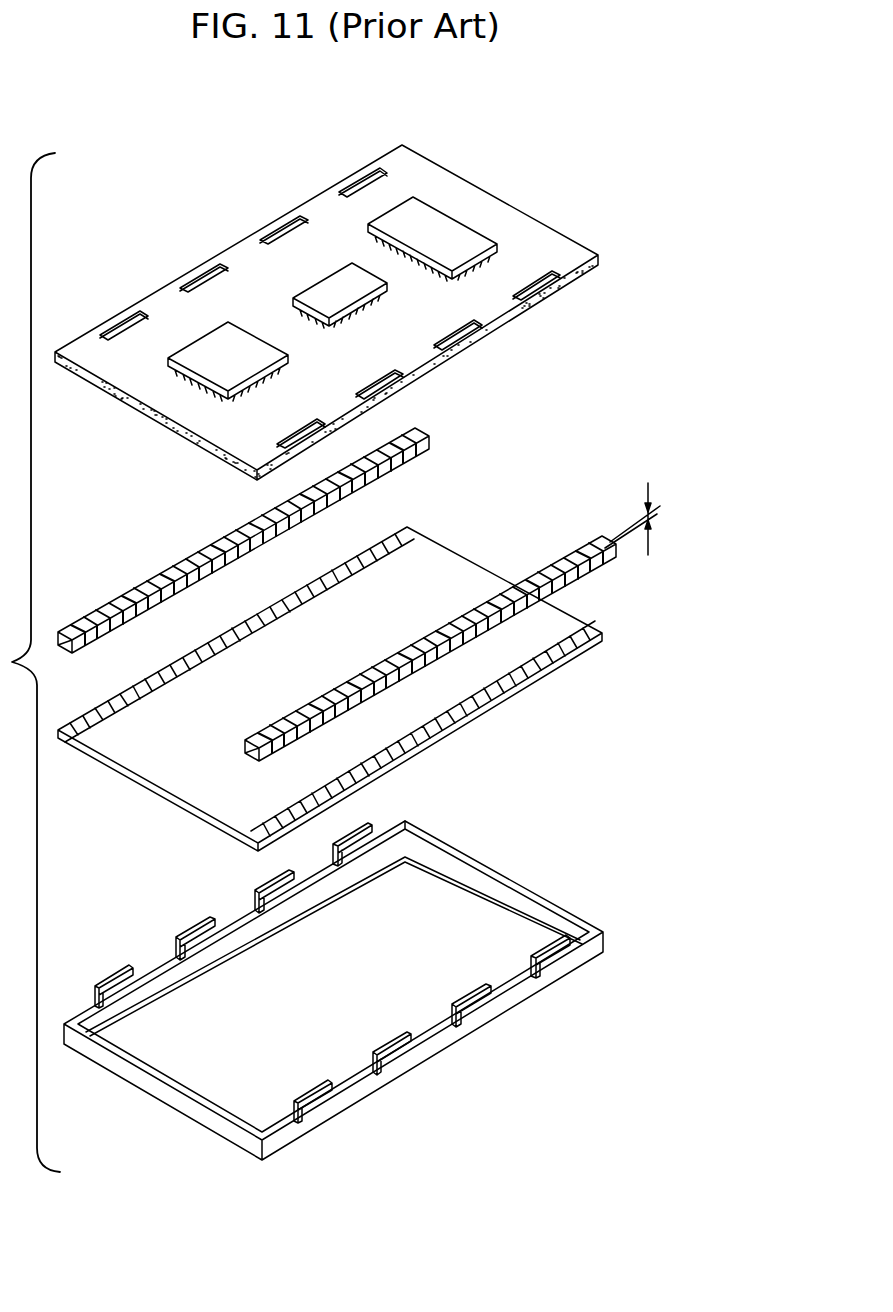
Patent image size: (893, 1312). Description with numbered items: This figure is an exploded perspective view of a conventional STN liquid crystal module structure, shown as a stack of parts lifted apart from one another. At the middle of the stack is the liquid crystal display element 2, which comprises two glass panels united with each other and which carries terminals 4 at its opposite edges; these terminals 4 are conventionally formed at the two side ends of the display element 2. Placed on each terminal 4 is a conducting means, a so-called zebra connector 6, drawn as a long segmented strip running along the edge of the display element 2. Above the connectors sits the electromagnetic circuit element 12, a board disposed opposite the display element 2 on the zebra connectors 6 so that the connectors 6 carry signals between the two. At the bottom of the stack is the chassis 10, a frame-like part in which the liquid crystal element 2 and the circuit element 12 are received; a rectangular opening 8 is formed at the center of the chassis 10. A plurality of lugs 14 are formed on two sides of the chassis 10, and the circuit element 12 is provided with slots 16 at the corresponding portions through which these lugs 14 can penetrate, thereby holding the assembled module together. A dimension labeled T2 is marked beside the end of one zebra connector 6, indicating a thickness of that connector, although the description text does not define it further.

The liquid crystal display element 2 is at (437, 565).
The terminals 4 is at (108, 707).
The zebra connector 6 is at (158, 578).
The rectangular opening 8 is at (203, 1072).
The chassis 10 is at (470, 878).
The electromagnetic circuit element 12 is at (498, 212).
The lugs 14 is at (282, 885).
The slots 16 is at (123, 320).
The thickness T2 is at (648, 519).